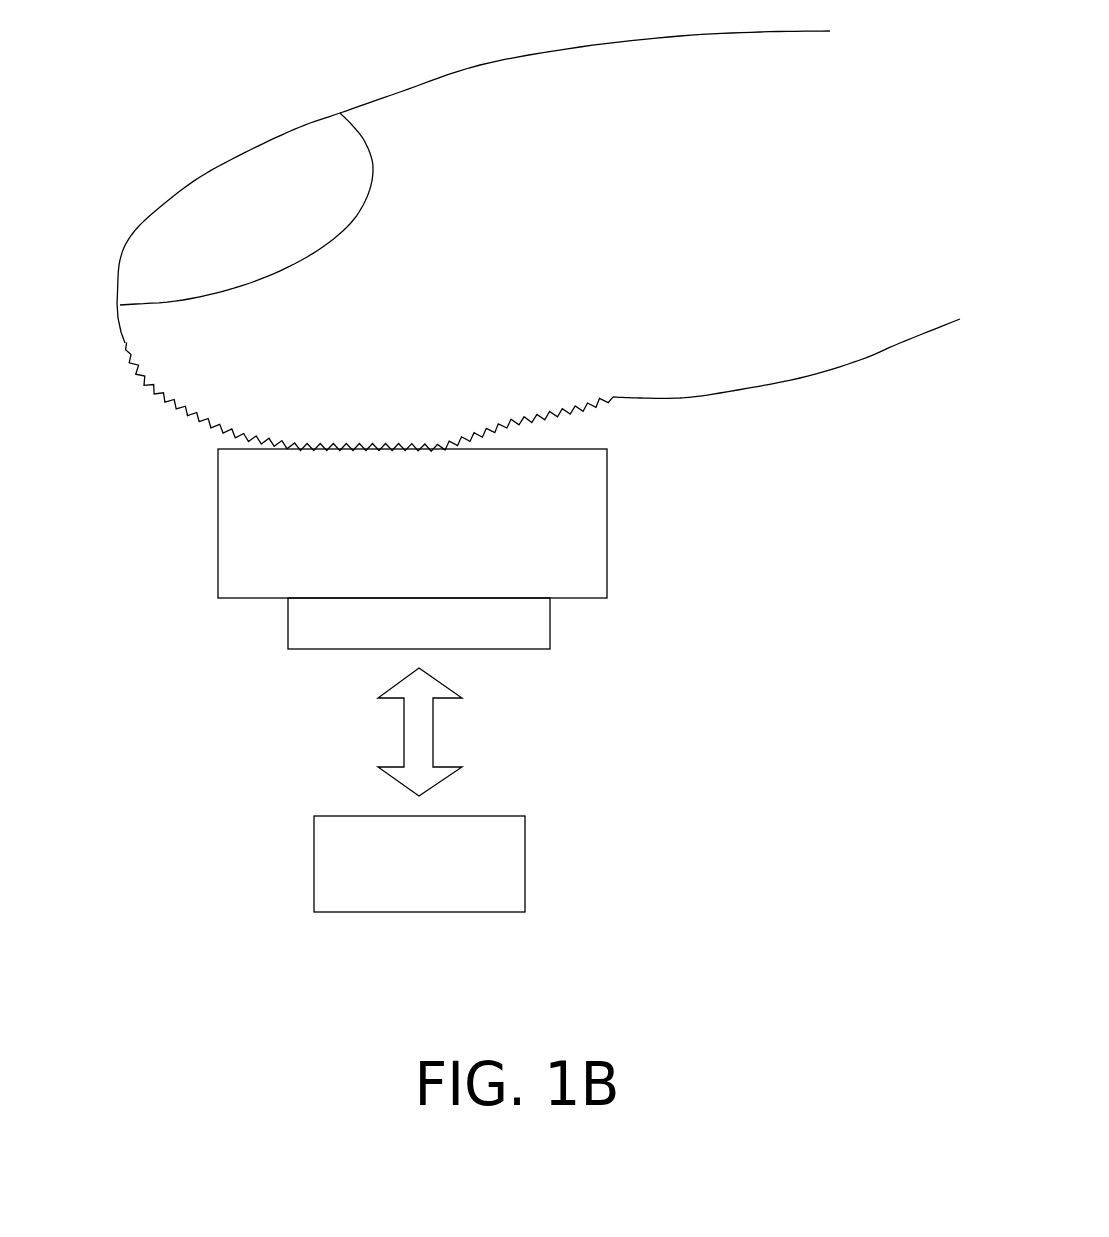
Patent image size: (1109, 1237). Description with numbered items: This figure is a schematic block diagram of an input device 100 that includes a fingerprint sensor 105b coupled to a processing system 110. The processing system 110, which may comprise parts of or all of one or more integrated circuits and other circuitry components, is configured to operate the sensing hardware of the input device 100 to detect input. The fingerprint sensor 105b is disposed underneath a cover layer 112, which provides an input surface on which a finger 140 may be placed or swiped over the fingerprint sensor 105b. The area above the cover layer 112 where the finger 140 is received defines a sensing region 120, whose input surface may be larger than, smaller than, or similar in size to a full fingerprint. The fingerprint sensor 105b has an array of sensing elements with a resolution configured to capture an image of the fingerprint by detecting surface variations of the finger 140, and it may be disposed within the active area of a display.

The input device 100 is at (168, 111).
The fingerprint sensor 105b is at (550, 636).
The processing system 110 is at (313, 870).
The cover layer 112 is at (607, 547).
The sensing region 120 is at (165, 429).
The finger 140 is at (820, 376).